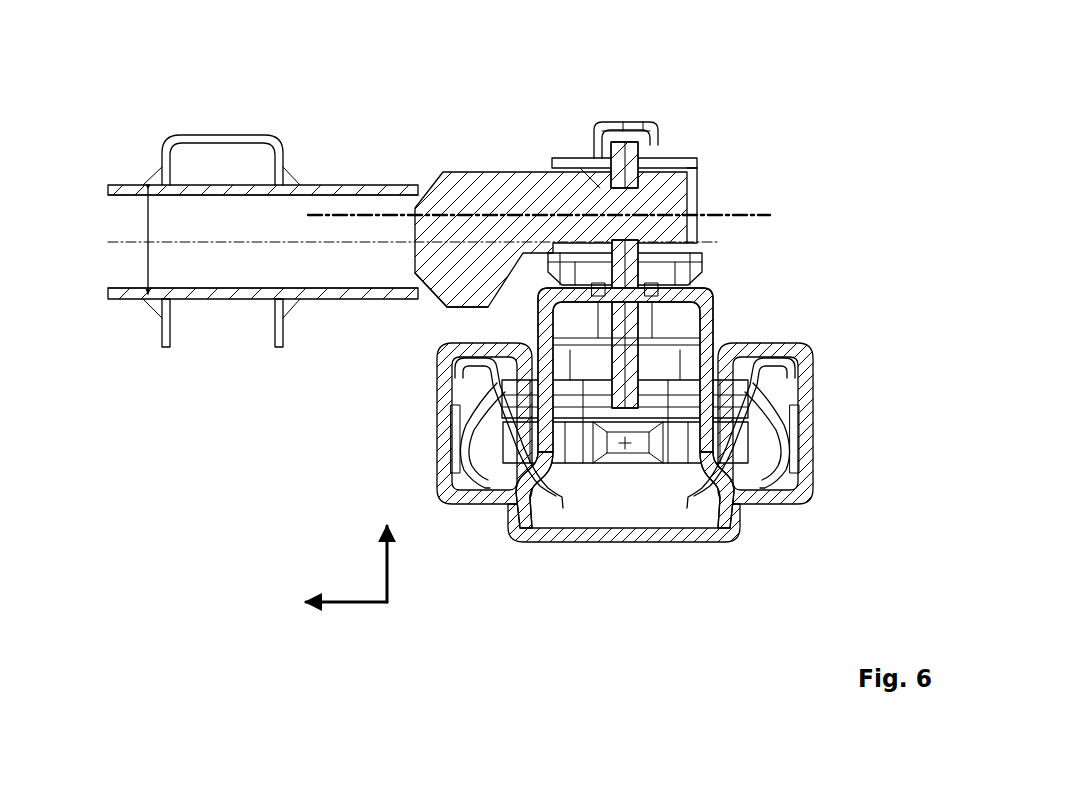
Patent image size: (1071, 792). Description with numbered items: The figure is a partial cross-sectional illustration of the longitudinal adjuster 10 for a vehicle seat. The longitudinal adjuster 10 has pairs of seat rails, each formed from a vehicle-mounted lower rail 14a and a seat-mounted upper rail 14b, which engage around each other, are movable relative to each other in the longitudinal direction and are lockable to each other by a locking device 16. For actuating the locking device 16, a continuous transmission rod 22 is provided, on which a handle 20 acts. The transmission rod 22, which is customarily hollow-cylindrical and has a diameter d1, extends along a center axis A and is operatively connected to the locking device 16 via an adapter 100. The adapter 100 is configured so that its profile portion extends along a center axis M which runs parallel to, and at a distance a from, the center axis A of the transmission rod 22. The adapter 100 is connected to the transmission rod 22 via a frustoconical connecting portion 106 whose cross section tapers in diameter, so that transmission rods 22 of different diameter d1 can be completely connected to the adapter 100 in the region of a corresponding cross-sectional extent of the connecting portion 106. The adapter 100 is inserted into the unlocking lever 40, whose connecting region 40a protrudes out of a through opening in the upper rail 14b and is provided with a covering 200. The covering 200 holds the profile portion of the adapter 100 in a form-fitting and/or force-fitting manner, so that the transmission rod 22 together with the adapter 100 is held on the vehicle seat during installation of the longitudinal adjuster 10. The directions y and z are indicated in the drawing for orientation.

The longitudinal adjuster 10 is at (294, 430).
The handle 20 is at (243, 135).
The transmission rod 22 is at (318, 190).
The center axis A is at (273, 243).
The center axis M is at (322, 215).
The distance a is at (403, 236).
The diameter d1 is at (148, 258).
The adapter 100 is at (483, 207).
The frustoconical connecting portion 106 is at (437, 318).
The covering 200 is at (653, 163).
The connecting region 40a is at (635, 165).
The unlocking lever 40 is at (615, 330).
The lower rail 14a is at (618, 545).
The upper rail 14b is at (713, 320).
The locking device 16 is at (680, 397).
The z axis z is at (370, 556).
The y axis y is at (332, 588).